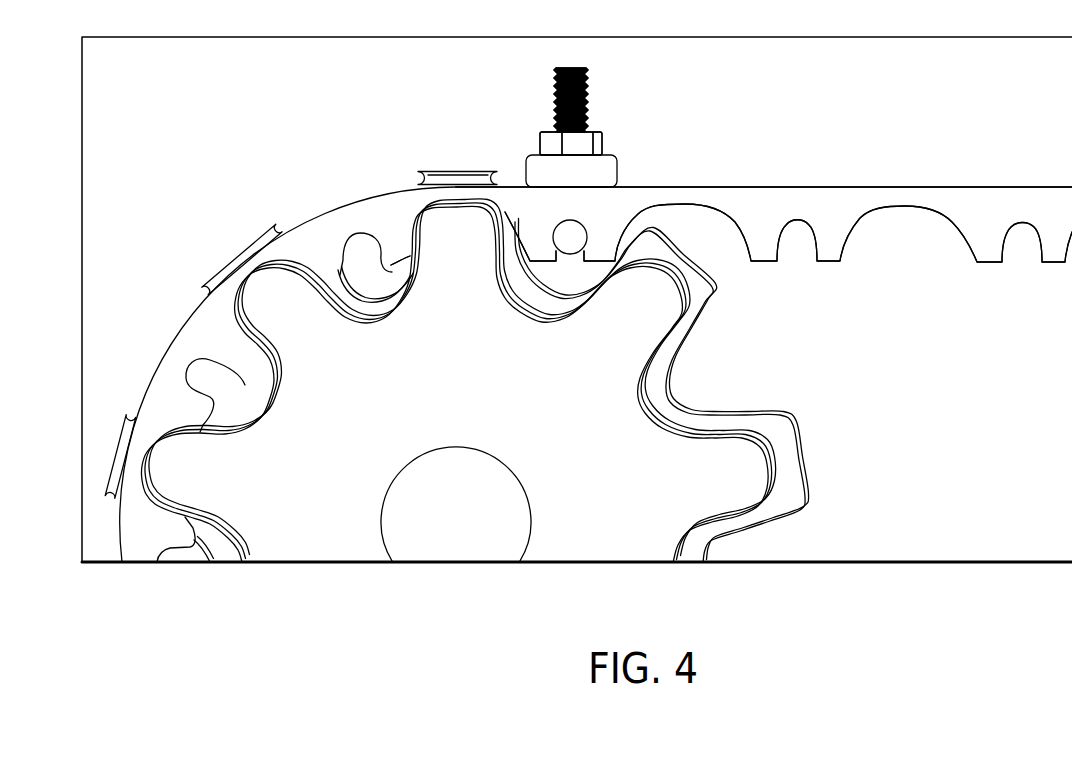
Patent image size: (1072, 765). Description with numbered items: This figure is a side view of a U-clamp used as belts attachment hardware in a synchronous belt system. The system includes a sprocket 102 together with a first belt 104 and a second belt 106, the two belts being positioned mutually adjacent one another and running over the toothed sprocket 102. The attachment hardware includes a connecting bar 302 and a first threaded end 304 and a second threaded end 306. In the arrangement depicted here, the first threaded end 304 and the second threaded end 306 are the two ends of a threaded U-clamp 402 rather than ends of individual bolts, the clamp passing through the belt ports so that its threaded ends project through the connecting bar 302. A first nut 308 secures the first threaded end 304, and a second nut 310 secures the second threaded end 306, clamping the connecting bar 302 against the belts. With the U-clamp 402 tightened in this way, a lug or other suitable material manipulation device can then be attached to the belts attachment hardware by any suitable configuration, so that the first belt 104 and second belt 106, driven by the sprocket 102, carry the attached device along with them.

The sprocket 102 is at (450, 357).
The first belt 104 is at (853, 230).
The second belt 106 is at (731, 226).
The connecting bar 302 is at (537, 167).
The first threaded end 304 is at (587, 77).
The second threaded end 306 is at (571, 100).
The first nut 308 is at (600, 140).
The second nut 310 is at (571, 143).
The threaded U-clamp 402 is at (572, 237).